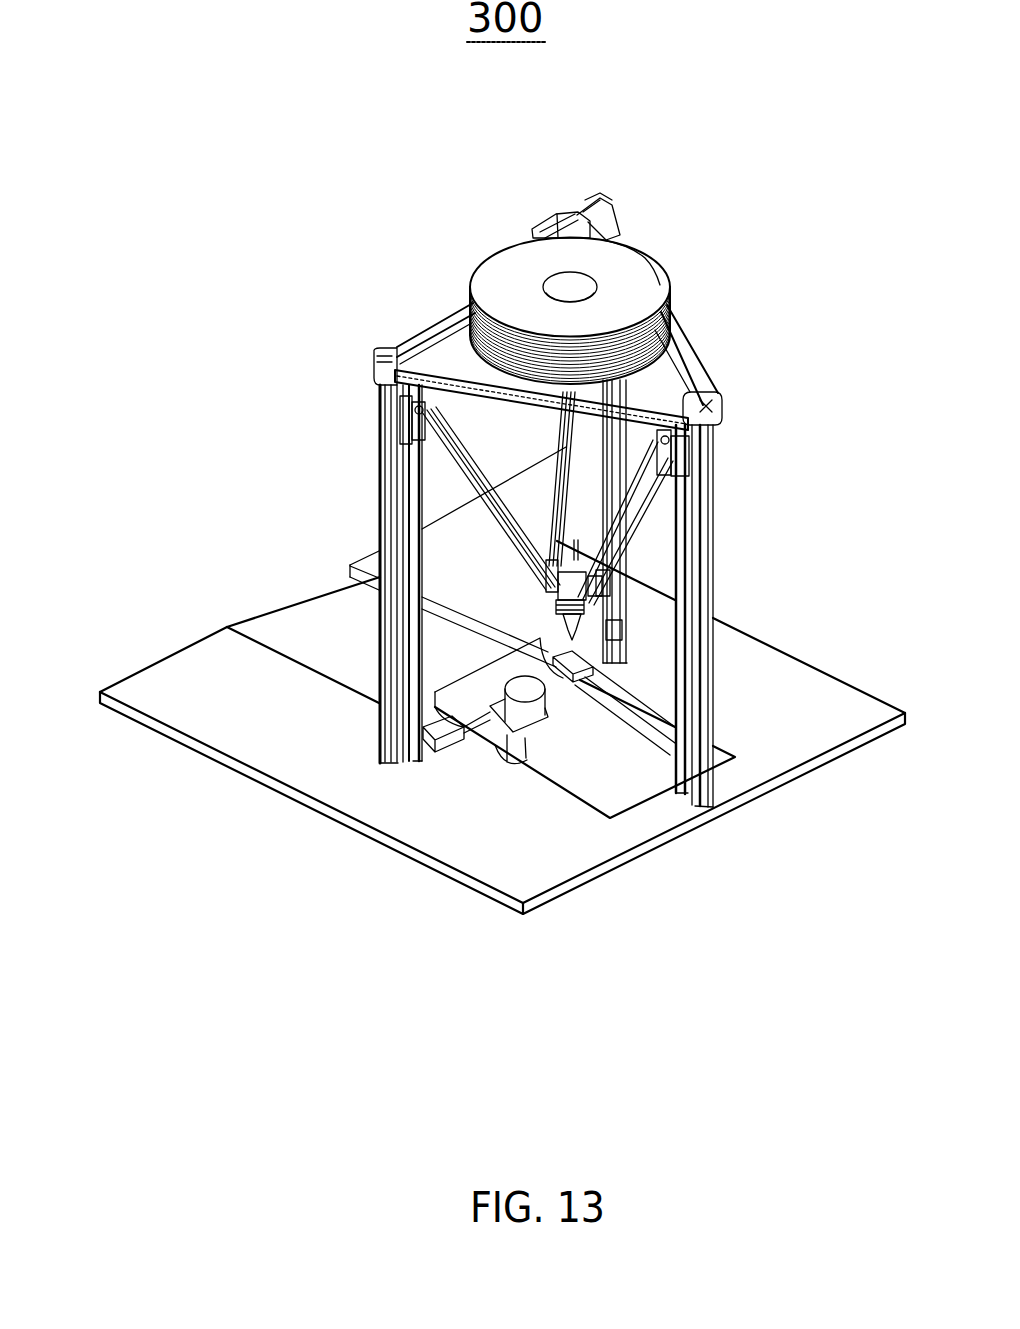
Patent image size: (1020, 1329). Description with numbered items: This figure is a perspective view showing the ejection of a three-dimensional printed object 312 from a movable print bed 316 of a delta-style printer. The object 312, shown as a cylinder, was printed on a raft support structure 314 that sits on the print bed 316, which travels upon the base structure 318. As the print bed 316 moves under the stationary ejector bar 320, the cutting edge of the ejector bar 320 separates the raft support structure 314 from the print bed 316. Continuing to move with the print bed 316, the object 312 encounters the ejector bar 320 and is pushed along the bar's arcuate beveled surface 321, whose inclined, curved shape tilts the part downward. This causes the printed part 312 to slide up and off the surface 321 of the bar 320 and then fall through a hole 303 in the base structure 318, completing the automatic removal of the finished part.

The hole 303 is at (633, 782).
The 3D-printed object 312 is at (524, 712).
The raft support structure 314 is at (543, 722).
The movable print bed 316 is at (310, 627).
The base structure 318 is at (242, 703).
The ejector bar 320 is at (457, 712).
The arcuate beveled surface 321 is at (460, 733).